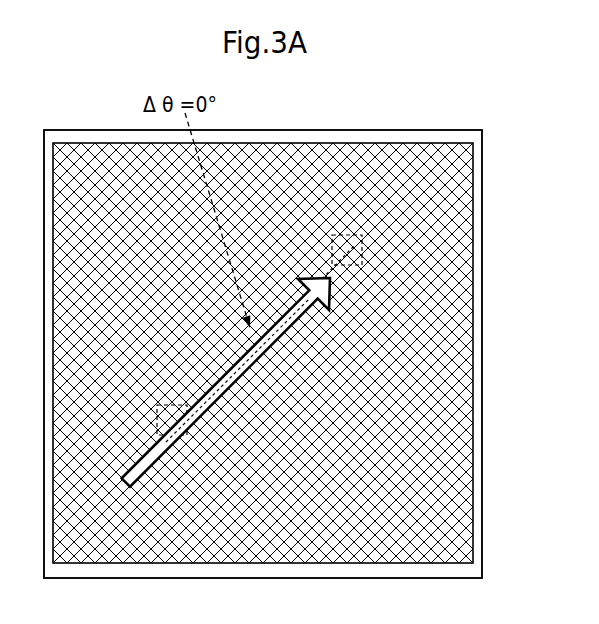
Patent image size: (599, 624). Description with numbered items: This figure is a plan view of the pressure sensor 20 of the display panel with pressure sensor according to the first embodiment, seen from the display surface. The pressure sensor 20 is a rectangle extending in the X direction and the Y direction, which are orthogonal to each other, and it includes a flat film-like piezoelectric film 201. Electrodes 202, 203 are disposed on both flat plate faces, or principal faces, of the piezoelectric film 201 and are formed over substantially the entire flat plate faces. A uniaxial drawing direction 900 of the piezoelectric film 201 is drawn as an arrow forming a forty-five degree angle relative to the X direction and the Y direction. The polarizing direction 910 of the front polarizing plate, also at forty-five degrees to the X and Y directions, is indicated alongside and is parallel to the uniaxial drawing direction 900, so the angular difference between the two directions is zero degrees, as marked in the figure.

The pressure sensor 20 is at (500, 133).
The piezoelectric film 201 is at (323, 140).
The electrode 202 is at (263, 380).
The electrode 203 is at (222, 553).
The uniaxial drawing direction 900 is at (279, 339).
The polarizing direction 910 is at (352, 262).